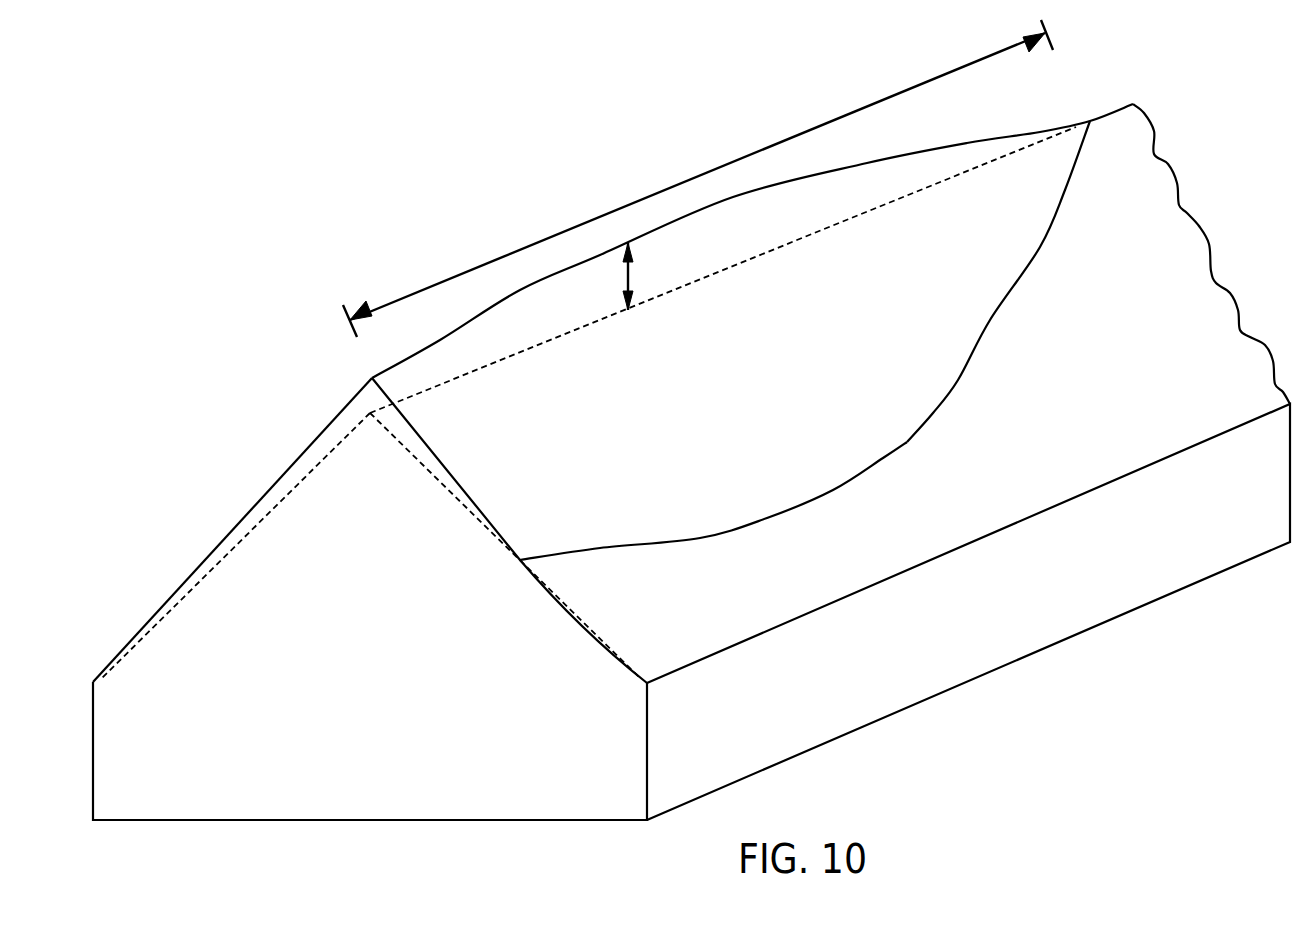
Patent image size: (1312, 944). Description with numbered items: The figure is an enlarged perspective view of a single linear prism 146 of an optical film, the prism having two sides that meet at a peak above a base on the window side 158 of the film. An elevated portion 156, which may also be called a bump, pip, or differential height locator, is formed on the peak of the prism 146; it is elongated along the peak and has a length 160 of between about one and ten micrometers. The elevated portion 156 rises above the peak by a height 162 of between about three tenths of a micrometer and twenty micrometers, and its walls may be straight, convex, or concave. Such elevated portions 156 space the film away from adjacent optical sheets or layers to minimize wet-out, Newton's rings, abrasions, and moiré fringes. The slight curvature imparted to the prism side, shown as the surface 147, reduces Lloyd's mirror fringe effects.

The linear prism 146 is at (238, 537).
The surface 147 is at (756, 322).
The elevated portion 156 is at (370, 378).
The window side 158 is at (237, 822).
The length 160 is at (747, 155).
The height 162 is at (630, 272).